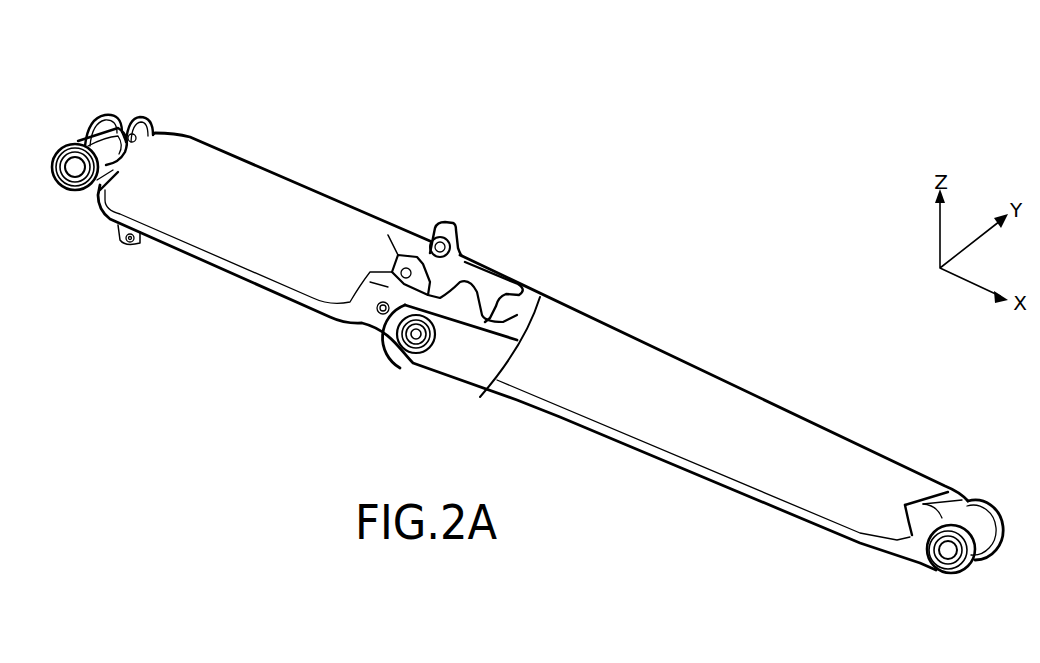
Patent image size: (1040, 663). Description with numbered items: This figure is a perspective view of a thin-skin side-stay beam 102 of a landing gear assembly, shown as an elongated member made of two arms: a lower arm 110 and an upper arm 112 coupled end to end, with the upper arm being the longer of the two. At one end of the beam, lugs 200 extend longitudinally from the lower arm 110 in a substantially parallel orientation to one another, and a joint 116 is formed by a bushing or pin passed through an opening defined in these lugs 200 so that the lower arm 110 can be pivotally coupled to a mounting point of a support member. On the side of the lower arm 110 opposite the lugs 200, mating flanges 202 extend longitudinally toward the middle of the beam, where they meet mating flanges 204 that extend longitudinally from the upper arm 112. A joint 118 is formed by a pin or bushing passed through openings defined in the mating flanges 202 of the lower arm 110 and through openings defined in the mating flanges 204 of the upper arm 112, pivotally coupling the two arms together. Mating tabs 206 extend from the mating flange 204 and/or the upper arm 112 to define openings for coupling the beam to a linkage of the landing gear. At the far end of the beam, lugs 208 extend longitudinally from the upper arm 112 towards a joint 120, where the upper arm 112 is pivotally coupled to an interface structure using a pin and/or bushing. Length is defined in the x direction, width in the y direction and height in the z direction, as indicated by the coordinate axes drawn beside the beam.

The thin-skin side-stay beam 102 is at (558, 177).
The lower arm 110 is at (752, 400).
The upper arm 112 is at (283, 193).
The joint 116 is at (947, 545).
The joint 118 is at (413, 336).
The joint 120 is at (74, 172).
The lugs 200 is at (920, 548).
The mating flanges 202 is at (443, 355).
The mating flanges 204 is at (450, 308).
The mating tabs 206 is at (442, 227).
The lugs 208 is at (100, 162).